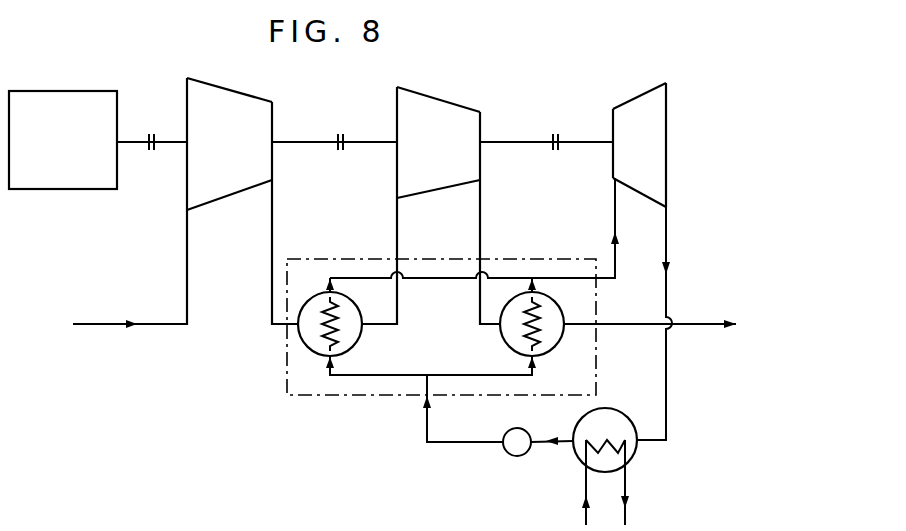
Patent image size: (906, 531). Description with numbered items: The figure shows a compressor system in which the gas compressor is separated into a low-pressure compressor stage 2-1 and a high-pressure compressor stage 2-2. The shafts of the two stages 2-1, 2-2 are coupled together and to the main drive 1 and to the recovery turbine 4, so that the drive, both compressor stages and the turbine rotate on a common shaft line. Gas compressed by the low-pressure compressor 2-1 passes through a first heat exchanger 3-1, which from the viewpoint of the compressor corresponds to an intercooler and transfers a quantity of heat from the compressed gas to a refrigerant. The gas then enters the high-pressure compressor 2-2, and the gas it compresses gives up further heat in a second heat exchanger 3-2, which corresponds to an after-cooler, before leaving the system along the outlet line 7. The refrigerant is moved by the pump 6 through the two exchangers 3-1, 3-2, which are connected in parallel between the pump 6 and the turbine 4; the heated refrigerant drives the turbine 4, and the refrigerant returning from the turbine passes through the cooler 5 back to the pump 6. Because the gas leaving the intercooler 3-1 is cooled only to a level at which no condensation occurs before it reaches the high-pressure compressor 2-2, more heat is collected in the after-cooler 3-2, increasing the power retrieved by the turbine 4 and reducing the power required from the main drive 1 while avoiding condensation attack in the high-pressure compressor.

The main drive 1 is at (77, 181).
The low-pressure compressor stage 2-1 is at (223, 187).
The high-pressure compressor stage 2-2 is at (433, 182).
The first heat exchanger 3-1 is at (355, 335).
The second heat exchanger 3-2 is at (550, 340).
The recovery turbine 4 is at (658, 165).
The cooler / heat exchanger 5 is at (632, 457).
The pump 6 is at (516, 457).
The outlet line 7 is at (701, 320).